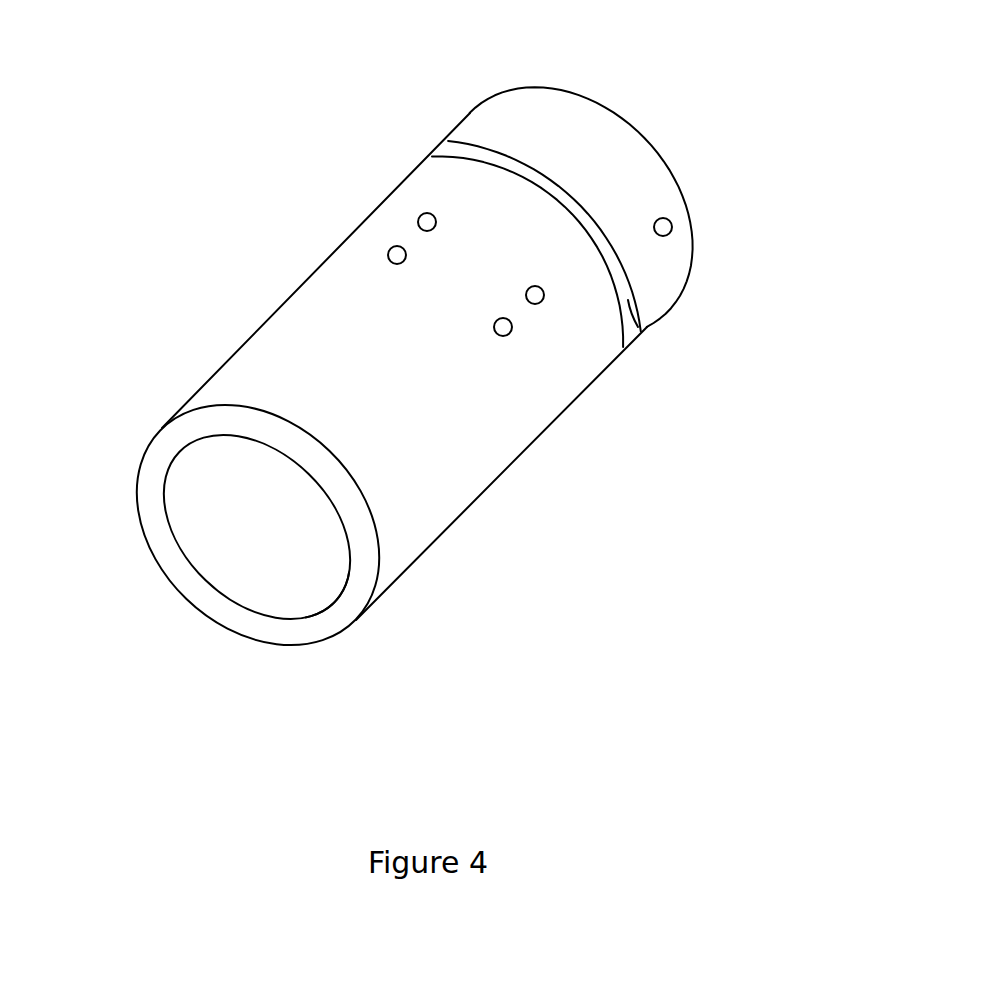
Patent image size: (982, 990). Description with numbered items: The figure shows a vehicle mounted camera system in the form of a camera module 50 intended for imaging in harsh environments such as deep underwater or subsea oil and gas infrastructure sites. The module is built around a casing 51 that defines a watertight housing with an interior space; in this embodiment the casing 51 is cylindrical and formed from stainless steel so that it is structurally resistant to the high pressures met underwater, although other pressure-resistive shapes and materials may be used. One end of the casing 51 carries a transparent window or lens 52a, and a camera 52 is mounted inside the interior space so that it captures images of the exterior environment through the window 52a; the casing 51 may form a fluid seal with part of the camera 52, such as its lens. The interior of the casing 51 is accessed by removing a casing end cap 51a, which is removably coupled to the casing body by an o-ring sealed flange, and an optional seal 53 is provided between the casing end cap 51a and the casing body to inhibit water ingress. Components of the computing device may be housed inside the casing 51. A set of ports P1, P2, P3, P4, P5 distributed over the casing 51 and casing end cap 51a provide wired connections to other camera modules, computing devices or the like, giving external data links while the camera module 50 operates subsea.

The camera module 50 is at (220, 120).
The casing 51 is at (248, 337).
The casing end cap 51a is at (640, 180).
The camera 52 is at (250, 529).
The transparent window or lens 52a is at (333, 600).
The seal 53 is at (647, 333).
The port P1 is at (391, 247).
The port P2 is at (423, 213).
The port P3 is at (508, 335).
The port P4 is at (538, 302).
The port P5 is at (673, 224).